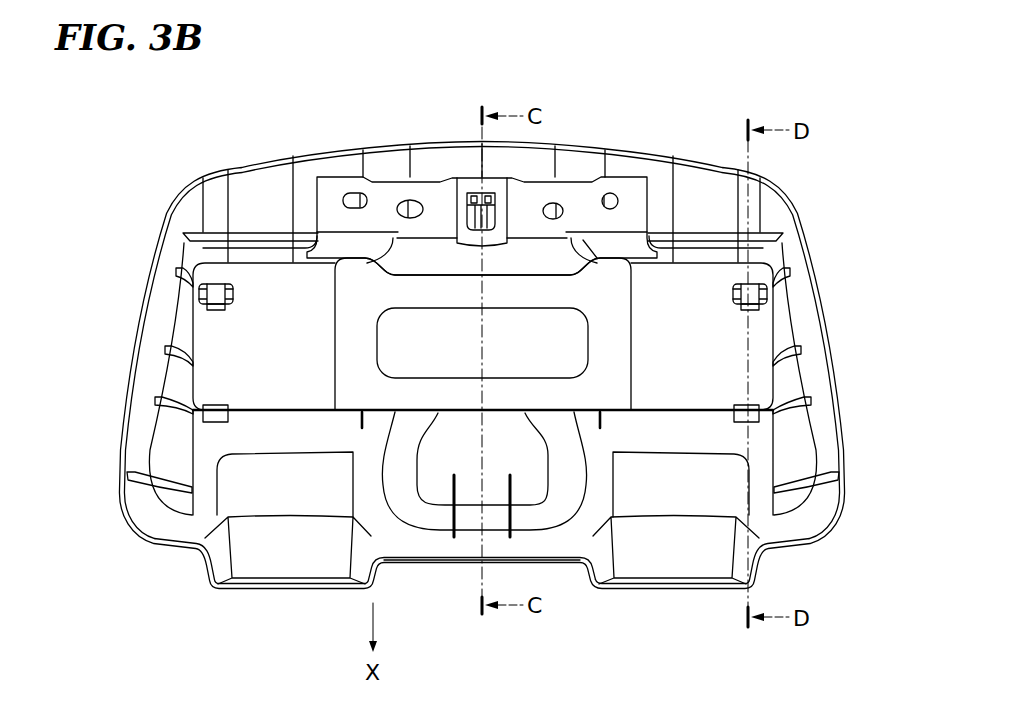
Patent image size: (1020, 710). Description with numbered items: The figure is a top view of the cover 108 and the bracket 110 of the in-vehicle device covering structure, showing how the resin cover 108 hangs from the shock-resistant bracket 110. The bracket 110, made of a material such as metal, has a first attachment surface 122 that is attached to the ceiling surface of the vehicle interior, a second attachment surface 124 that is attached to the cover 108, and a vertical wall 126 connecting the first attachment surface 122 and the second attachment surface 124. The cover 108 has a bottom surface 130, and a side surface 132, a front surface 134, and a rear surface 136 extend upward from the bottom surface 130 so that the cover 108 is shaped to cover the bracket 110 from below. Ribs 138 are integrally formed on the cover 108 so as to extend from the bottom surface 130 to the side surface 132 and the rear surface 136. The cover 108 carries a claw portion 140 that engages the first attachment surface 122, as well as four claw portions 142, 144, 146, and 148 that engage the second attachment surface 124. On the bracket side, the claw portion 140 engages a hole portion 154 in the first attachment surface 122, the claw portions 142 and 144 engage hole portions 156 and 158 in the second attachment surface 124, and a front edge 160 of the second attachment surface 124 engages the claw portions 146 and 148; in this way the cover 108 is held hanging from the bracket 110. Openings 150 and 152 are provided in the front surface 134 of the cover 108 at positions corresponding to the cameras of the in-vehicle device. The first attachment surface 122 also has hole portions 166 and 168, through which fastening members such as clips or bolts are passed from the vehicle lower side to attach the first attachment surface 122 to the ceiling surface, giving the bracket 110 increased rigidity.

The cover 108 is at (266, 150).
The bracket 110 is at (337, 216).
The first attachment surface 122 is at (625, 183).
The second attachment surface 124 is at (650, 388).
The vertical wall 126 is at (620, 243).
The bottom surface 130 is at (433, 488).
The side surface 132 is at (165, 318).
The front surface 134 is at (567, 564).
The rear surface 136 is at (387, 160).
The ribs 138 is at (147, 410).
The claw portion 140 is at (497, 213).
The claw portion 142 is at (748, 311).
The claw portion 144 is at (216, 310).
The claw portion 146 is at (737, 407).
The claw portion 148 is at (216, 410).
The opening 150 is at (672, 590).
The opening 152 is at (284, 592).
The hole portion 154 is at (476, 232).
The hole portion 156 is at (731, 296).
The hole portion 158 is at (235, 293).
The front edge 160 is at (292, 408).
The hole portion 166 is at (556, 200).
The hole portion 168 is at (428, 200).